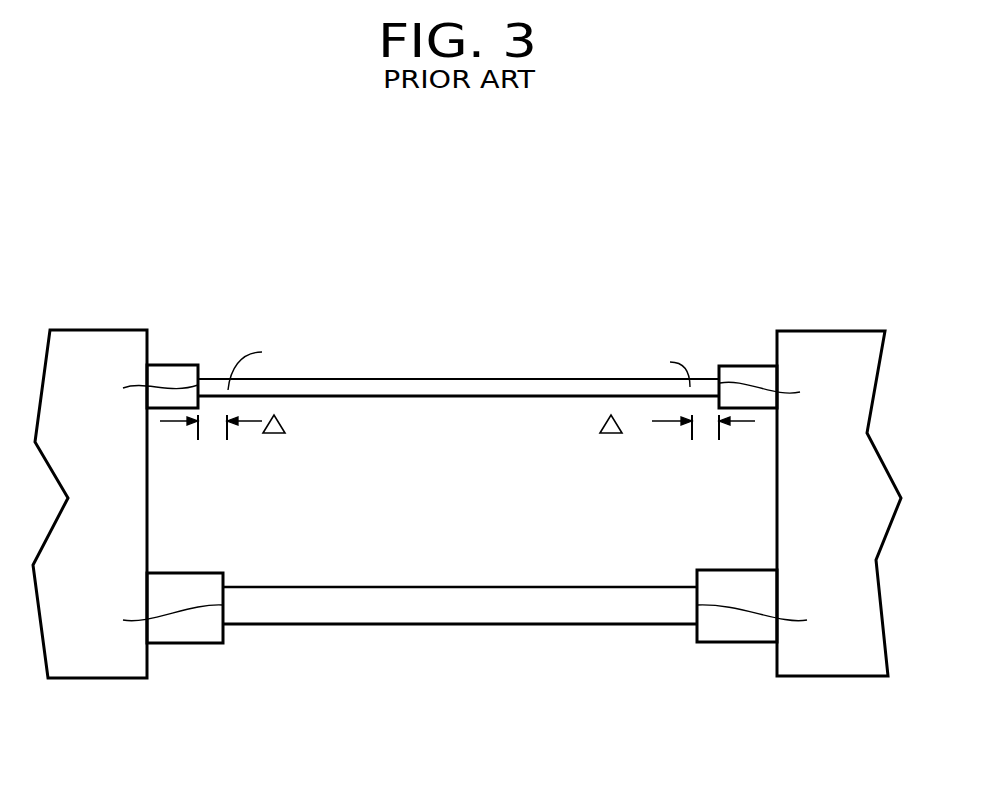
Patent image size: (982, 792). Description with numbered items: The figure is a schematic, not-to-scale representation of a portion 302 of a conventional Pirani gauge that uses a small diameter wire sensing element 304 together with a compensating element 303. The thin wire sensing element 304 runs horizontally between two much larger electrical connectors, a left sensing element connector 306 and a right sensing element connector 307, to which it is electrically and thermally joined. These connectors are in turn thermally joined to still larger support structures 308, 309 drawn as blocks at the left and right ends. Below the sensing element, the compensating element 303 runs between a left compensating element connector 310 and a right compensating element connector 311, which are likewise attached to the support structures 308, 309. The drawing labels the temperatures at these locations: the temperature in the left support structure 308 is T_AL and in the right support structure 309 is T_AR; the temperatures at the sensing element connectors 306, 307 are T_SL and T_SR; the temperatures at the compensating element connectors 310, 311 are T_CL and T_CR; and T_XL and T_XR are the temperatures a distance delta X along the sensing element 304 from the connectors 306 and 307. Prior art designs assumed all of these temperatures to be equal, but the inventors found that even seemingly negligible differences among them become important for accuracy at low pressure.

The portion of a conventional Pirani gauge 302 is at (699, 672).
The compensating element 303 is at (355, 610).
The small diameter wire sensing element 304 is at (548, 383).
The left sensing element connector 306 is at (171, 365).
The right sensing element connector 307 is at (751, 365).
The support structure 308 is at (89, 330).
The support structure 309 is at (829, 330).
The left compensating element connector 310 is at (183, 577).
The right compensating element connector 311 is at (749, 567).